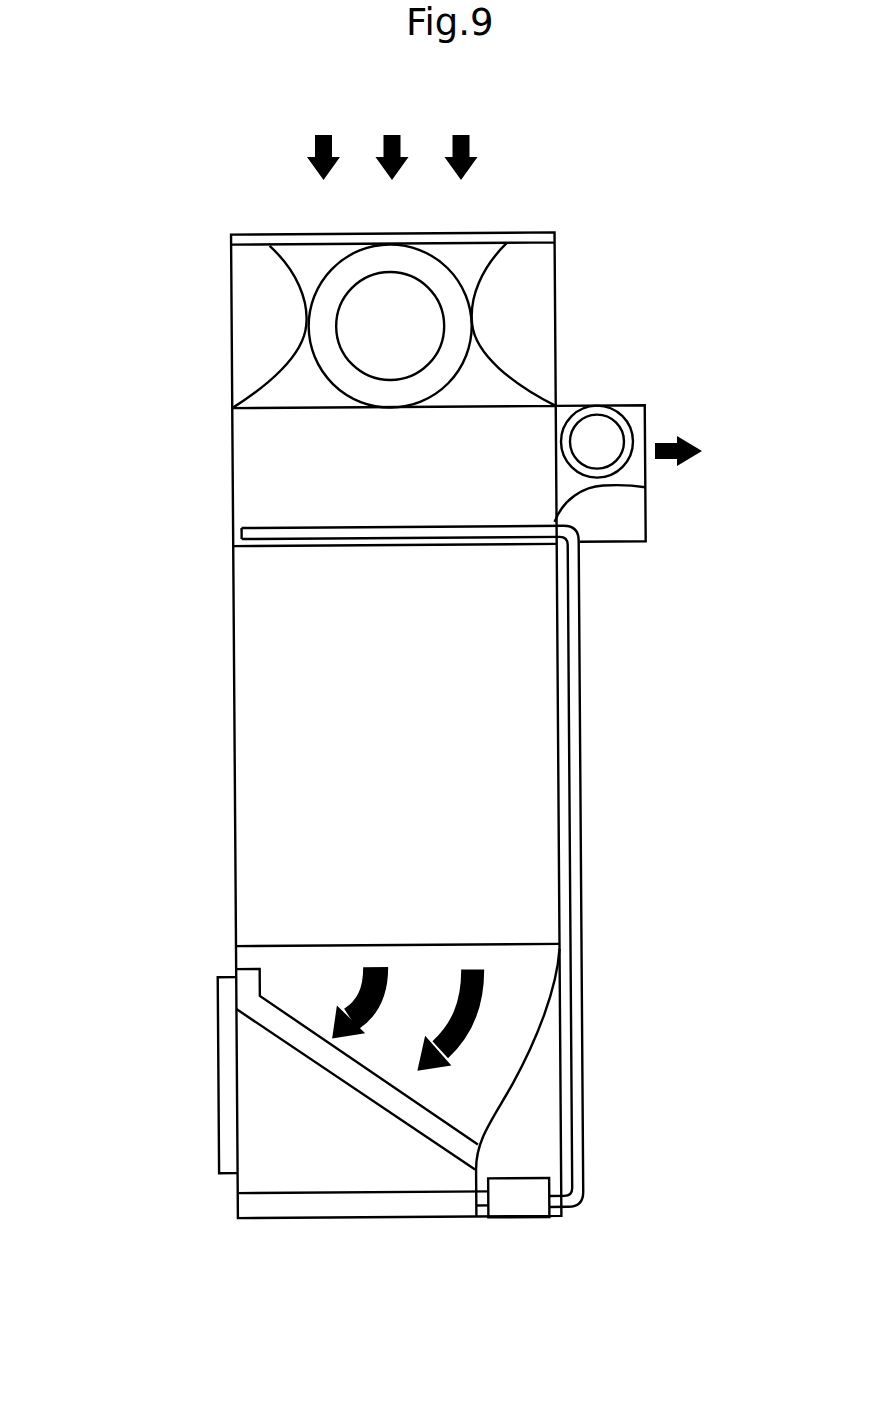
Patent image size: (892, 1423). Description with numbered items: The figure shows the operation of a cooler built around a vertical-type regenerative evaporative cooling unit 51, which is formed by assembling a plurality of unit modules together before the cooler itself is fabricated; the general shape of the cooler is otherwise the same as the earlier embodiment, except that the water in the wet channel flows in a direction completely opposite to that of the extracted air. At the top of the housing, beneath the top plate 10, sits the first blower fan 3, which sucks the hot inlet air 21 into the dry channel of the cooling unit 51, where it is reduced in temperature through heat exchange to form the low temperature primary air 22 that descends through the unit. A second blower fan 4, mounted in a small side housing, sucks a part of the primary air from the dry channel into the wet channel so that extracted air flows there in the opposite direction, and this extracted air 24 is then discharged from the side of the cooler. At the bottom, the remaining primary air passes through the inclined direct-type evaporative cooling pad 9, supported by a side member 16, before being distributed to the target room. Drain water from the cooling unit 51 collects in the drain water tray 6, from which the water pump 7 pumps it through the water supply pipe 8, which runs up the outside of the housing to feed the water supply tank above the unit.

The first blower fan 3 is at (437, 318).
The second blower fan 4 is at (595, 427).
The drain water tray 6 is at (365, 1213).
The water pump 7 is at (527, 1212).
The water supply pipe 8 is at (580, 817).
The direct-type evaporative cooling pad 9 is at (445, 1133).
The housing top plate 10 is at (483, 238).
The side bracket 16 is at (230, 1032).
The hot inlet air 21 is at (393, 134).
The low temperature primary air 22 is at (478, 1010).
The exhaust air flow 24 is at (697, 440).
The vertical-type regenerative evaporative cooling unit 51 is at (510, 712).